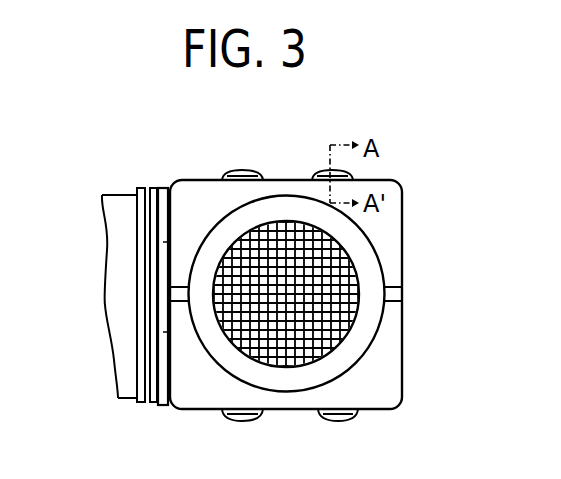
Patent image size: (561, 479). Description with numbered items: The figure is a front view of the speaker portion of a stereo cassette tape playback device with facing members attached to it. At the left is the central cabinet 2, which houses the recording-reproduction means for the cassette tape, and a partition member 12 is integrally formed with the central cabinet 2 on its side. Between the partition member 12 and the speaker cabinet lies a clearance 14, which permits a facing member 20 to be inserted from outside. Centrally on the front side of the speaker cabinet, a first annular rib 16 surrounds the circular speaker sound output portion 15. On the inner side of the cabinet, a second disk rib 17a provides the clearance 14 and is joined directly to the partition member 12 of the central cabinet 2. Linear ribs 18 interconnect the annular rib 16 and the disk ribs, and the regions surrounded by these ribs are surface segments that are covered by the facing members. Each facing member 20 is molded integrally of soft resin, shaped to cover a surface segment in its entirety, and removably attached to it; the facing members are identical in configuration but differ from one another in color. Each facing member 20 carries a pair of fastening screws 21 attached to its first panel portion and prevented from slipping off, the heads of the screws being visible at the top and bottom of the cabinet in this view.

The central cabinet 2 is at (115, 205).
The partition member 12 is at (157, 188).
The clearance 14 is at (163, 188).
The speaker sound output portion 15 is at (283, 340).
The first annular rib 16 is at (367, 332).
The second disk rib 17a is at (168, 335).
The linear rib 18 is at (393, 295).
The facing member 20 is at (393, 237).
The fastening screw 21 is at (233, 170).